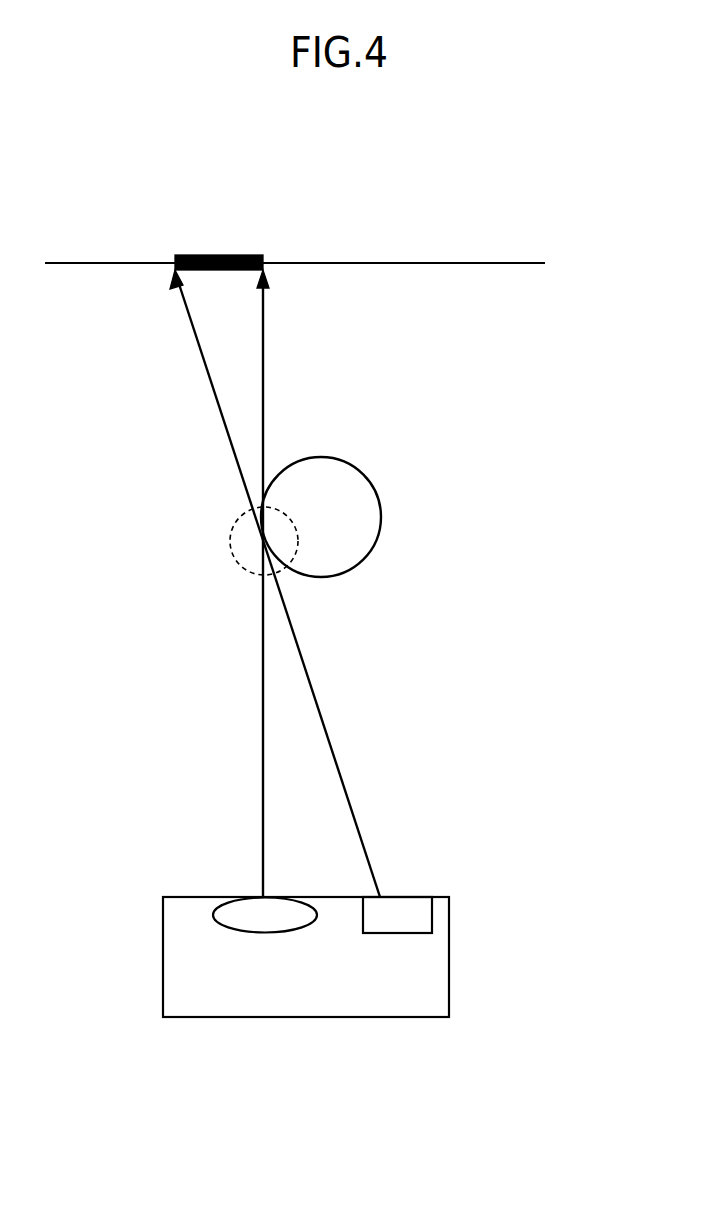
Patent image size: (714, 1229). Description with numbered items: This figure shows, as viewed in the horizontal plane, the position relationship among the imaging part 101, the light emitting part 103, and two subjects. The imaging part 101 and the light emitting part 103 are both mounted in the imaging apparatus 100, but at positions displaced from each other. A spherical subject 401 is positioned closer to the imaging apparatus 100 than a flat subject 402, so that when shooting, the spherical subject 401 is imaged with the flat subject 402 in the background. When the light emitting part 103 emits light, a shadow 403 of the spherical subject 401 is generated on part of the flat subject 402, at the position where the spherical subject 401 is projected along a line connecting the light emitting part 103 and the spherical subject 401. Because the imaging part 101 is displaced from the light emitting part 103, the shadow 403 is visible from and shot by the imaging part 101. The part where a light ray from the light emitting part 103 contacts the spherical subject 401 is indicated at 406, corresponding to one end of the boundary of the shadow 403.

The imaging apparatus 100 is at (502, 977).
The imaging part 101 is at (212, 913).
The light emitting part 103 is at (432, 913).
The spherical subject 401 is at (375, 490).
The flat subject 402 is at (405, 263).
The shadow 403 is at (220, 255).
The contact part of light ray and spherical subject 406 is at (230, 545).